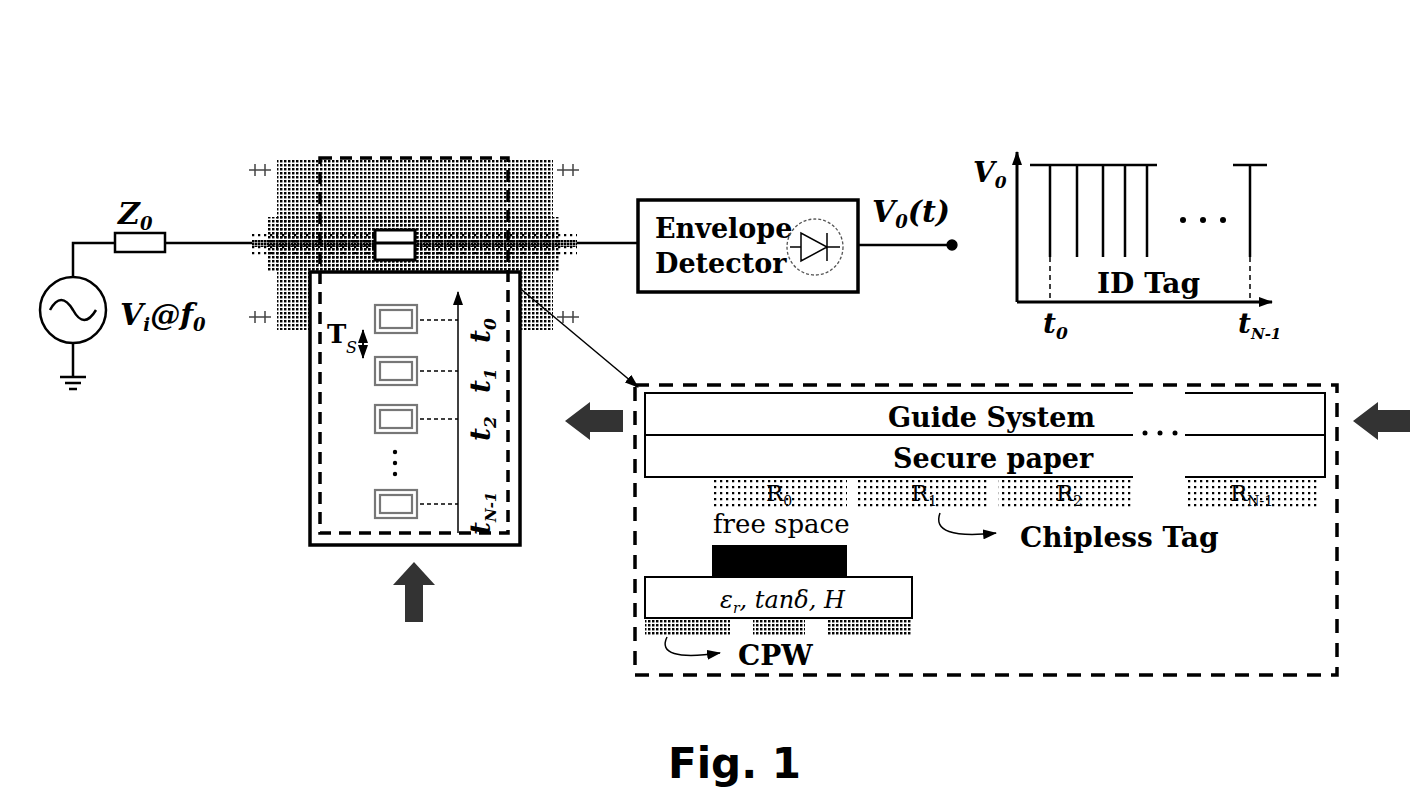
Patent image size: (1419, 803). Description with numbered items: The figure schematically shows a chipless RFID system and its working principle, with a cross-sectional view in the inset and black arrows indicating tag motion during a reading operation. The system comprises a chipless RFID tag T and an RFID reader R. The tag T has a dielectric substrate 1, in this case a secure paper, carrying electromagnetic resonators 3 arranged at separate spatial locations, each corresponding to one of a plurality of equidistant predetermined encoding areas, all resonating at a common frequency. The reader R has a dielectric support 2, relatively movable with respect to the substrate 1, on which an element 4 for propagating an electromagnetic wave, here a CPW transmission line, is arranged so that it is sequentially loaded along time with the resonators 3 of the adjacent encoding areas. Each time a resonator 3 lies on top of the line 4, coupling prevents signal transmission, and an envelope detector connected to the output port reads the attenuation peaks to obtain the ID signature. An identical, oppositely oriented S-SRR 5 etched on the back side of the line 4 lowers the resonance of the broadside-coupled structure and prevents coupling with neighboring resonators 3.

The dielectric substrate 1 is at (315, 548).
The dielectric support 2 is at (530, 182).
The electromagnetic resonators 3 is at (385, 515).
The element for propagating an electromagnetic wave 4 is at (348, 222).
The S-SRR 5 is at (402, 230).
The RFID reader R is at (188, 145).
The chipless RFID tag T is at (292, 480).